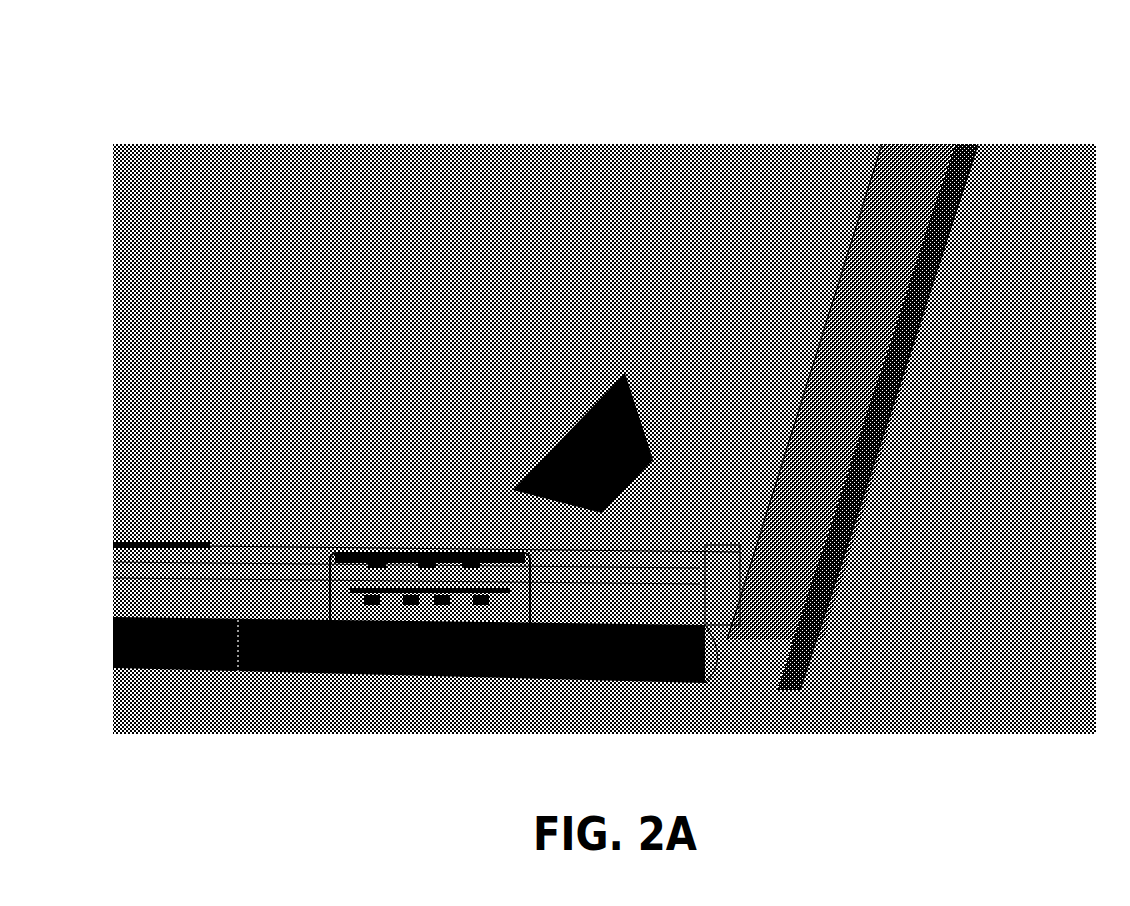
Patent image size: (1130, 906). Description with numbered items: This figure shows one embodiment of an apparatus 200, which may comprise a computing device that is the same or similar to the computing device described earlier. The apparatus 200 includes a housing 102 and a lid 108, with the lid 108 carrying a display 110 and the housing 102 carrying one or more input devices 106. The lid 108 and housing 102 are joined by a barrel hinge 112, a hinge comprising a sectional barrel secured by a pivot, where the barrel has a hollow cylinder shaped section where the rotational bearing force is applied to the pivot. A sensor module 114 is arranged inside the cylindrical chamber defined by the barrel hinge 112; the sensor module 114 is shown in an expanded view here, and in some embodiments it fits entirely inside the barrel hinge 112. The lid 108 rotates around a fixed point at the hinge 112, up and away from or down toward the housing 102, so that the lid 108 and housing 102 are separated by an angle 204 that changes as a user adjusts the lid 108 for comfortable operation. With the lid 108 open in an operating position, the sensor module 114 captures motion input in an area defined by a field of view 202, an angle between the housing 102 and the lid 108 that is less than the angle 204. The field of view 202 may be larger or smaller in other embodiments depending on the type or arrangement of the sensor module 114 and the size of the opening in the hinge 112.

The apparatus 200 is at (626, 58).
The housing 102 is at (238, 672).
The input device 106 is at (179, 540).
The lid 108 is at (915, 368).
The display 110 is at (848, 297).
The barrel hinge 112 is at (728, 565).
The sensor module 114 is at (728, 653).
The field of view 202 is at (583, 297).
The angle 204 is at (848, 191).